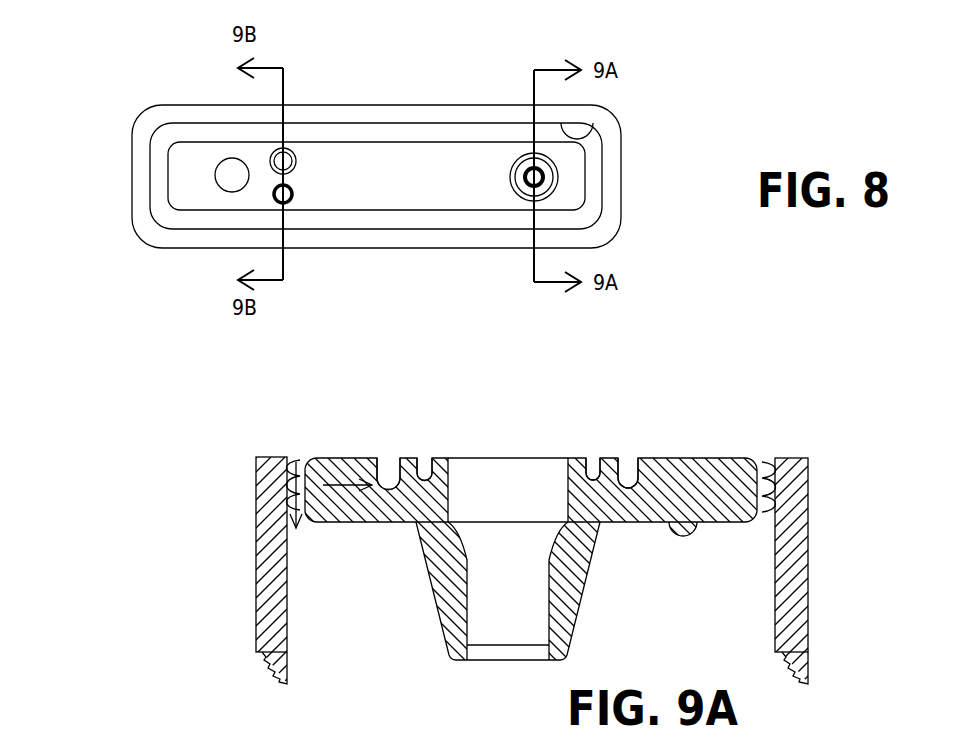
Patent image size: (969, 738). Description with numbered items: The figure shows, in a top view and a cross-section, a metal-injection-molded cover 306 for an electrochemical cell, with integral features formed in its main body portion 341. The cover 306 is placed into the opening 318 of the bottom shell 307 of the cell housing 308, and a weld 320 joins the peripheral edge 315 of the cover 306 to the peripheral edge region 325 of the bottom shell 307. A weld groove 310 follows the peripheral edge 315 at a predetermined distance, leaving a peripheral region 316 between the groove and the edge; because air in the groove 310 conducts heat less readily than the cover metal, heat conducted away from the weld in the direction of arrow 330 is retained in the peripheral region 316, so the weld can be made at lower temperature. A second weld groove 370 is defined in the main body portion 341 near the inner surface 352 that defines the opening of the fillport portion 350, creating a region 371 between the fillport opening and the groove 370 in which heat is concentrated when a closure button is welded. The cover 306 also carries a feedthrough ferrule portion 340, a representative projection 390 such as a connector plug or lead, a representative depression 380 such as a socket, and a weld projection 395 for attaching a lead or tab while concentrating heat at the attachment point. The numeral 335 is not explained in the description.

In FIG. 8, the cover 306 is at (466, 105).
In FIG. 9A, the cover 306 is at (465, 458).
In FIG. 9A, the bottom shell 307 is at (288, 610).
In FIG. 9A, the cell housing 308 is at (258, 449).
In FIG. 8, the weld groove 310 is at (588, 133).
In FIG. 9A, the weld groove 310 is at (390, 465).
In FIG. 9A, the peripheral edge 315 is at (292, 463).
In FIG. 8, the peripheral region 316 is at (446, 237).
In FIG. 9A, the peripheral region 316 is at (330, 458).
In FIG. 9A, the opening 318 is at (780, 520).
In FIG. 9A, the weld 320 is at (290, 457).
In FIG. 9A, the peripheral edge region 325 is at (268, 490).
In FIG. 9A, the arrow 330 is at (333, 488).
In FIG. 9A, the wall recess 335 is at (268, 512).
In FIG. 8, the feedthrough ferrule portion 340 is at (197, 175).
In FIG. 8, the main body portion 341 is at (350, 165).
In FIG. 8, the fillport portion 350 is at (572, 187).
In FIG. 9A, the fillport portion 350 is at (437, 627).
In FIG. 9A, the inner surface 352 is at (565, 548).
In FIG. 8, the weld groove 370 is at (558, 177).
In FIG. 9A, the weld groove 370 is at (426, 462).
In FIG. 9A, the region 371 is at (586, 460).
In FIG. 8, the depression 380 is at (275, 200).
In FIG. 8, the projection 390 is at (274, 153).
In FIG. 9A, the weld projection 395 is at (693, 537).